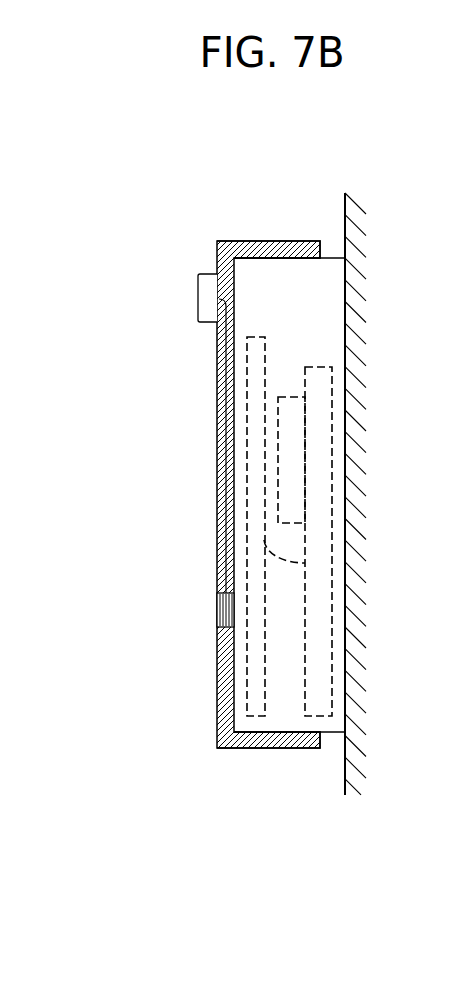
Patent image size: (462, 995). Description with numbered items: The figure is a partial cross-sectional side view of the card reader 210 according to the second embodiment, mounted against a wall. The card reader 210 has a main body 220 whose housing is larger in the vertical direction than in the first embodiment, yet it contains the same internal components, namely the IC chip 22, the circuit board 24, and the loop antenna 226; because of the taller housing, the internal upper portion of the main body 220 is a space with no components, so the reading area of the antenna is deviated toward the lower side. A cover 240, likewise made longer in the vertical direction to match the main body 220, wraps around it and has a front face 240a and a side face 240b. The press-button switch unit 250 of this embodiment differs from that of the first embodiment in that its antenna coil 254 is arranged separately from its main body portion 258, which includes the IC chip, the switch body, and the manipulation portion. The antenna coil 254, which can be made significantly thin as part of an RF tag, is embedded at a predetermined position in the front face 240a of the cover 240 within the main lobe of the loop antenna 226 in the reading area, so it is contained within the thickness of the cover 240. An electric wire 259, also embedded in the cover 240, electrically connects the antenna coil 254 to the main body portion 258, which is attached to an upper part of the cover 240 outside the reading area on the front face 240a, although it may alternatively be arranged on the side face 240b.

The card reader 210 is at (375, 197).
The main body 220 is at (333, 258).
The IC chip 22 is at (290, 397).
The circuit board 24 is at (315, 367).
The loop antenna 226 is at (265, 702).
The cover 240 is at (238, 241).
The front face 240a is at (218, 683).
The side face 240b is at (266, 241).
The press-button switch unit 250 is at (142, 450).
The antenna coil 254 is at (217, 613).
The main body portion 258 is at (198, 298).
The electric wire 259 is at (218, 397).